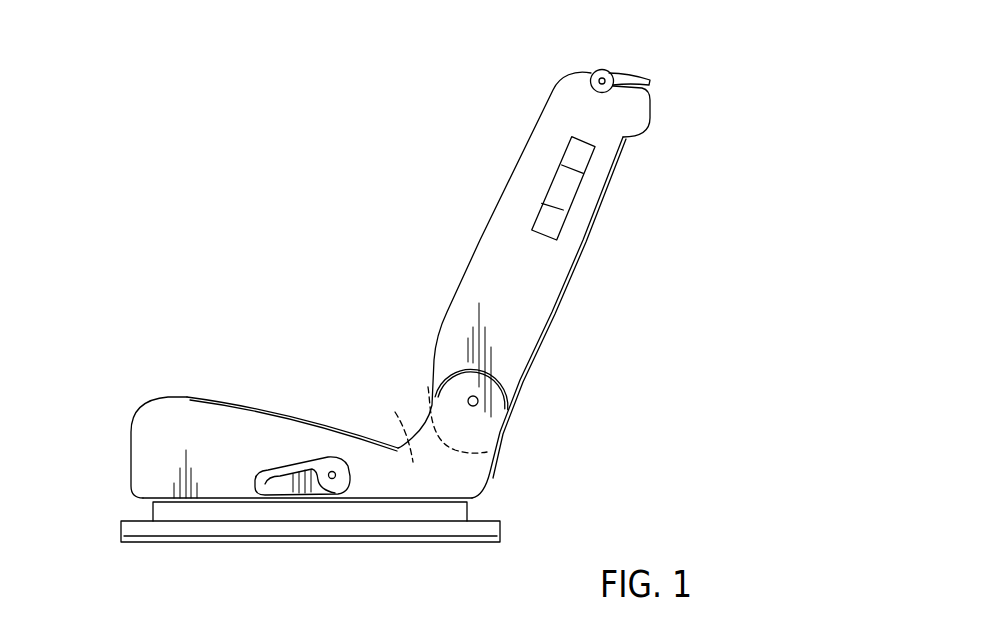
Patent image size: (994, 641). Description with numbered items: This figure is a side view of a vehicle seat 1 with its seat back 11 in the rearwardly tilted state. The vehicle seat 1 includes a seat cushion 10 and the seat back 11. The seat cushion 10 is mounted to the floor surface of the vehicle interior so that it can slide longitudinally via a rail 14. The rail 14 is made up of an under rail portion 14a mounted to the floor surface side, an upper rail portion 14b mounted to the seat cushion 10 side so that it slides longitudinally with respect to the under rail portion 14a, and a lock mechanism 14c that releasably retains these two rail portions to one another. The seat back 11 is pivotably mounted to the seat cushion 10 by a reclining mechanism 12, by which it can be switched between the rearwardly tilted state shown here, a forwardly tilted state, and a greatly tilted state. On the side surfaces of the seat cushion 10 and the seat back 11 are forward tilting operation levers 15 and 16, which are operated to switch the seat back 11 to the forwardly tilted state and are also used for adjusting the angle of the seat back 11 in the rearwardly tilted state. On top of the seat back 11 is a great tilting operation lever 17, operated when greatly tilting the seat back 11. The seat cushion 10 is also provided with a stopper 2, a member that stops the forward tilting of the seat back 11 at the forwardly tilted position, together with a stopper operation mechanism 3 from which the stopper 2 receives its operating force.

The vehicle seat 1 is at (225, 344).
The stopper 2 is at (397, 424).
The stopper operation mechanism 3 is at (453, 450).
The seat cushion 10 is at (160, 415).
The seat back 11 is at (527, 282).
The reclining mechanism 12 is at (467, 399).
The rail 14 is at (256, 536).
The under rail portion 14a is at (137, 532).
The upper rail portion 14b is at (153, 510).
The lock mechanism 14c is at (295, 522).
The forward tilting operation lever 15 is at (293, 470).
The forward tilting operation lever 16 is at (580, 157).
The great tilting operation lever 17 is at (630, 72).